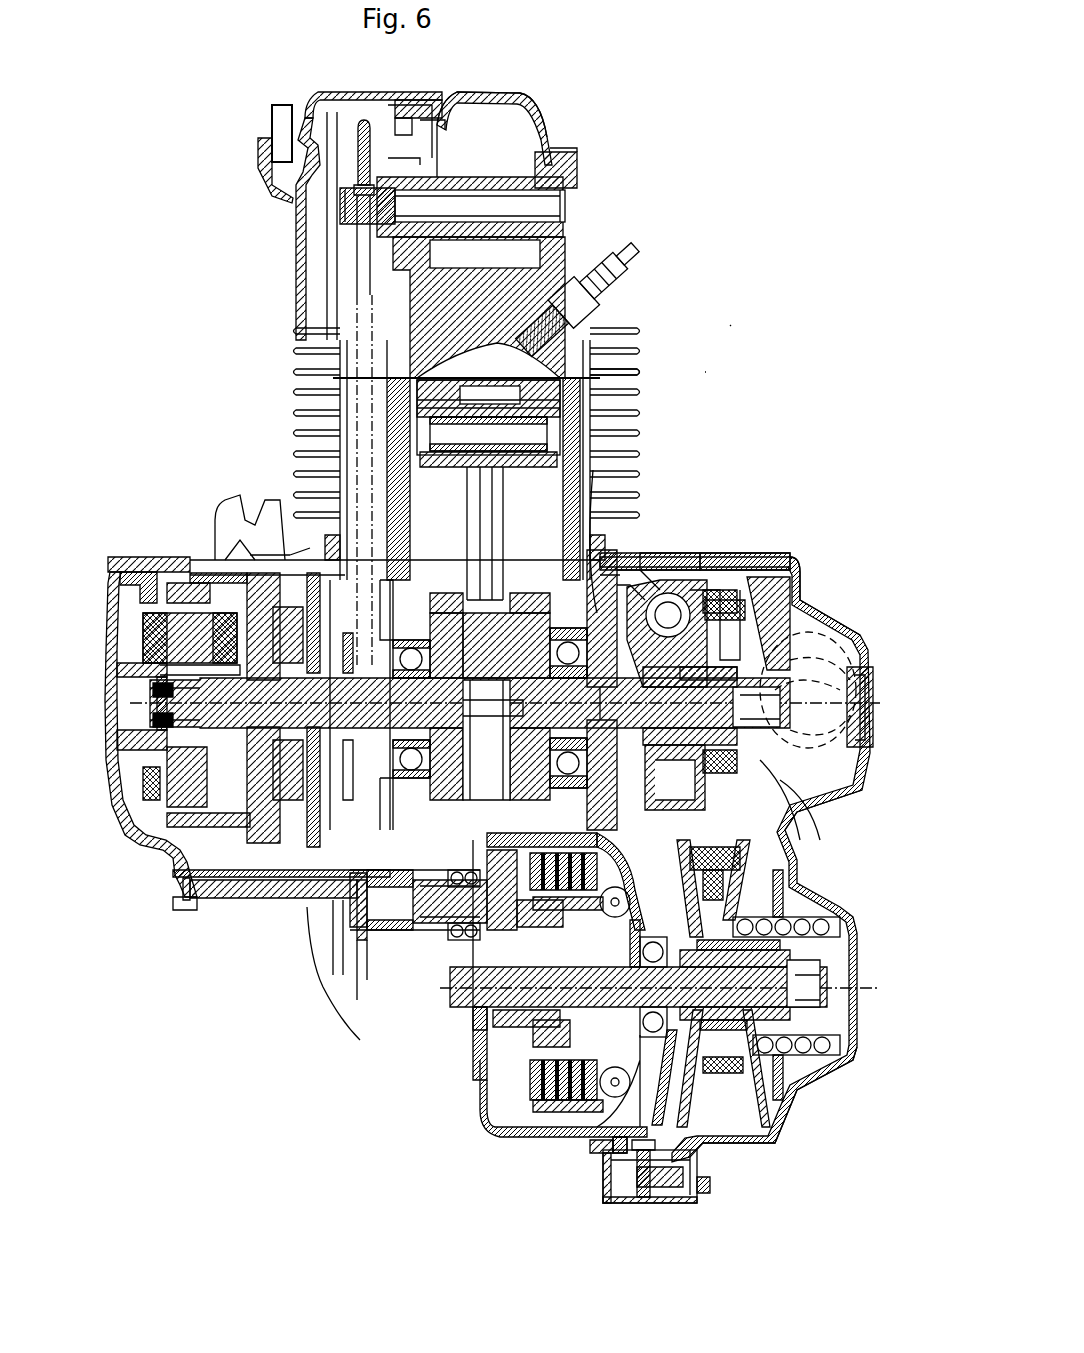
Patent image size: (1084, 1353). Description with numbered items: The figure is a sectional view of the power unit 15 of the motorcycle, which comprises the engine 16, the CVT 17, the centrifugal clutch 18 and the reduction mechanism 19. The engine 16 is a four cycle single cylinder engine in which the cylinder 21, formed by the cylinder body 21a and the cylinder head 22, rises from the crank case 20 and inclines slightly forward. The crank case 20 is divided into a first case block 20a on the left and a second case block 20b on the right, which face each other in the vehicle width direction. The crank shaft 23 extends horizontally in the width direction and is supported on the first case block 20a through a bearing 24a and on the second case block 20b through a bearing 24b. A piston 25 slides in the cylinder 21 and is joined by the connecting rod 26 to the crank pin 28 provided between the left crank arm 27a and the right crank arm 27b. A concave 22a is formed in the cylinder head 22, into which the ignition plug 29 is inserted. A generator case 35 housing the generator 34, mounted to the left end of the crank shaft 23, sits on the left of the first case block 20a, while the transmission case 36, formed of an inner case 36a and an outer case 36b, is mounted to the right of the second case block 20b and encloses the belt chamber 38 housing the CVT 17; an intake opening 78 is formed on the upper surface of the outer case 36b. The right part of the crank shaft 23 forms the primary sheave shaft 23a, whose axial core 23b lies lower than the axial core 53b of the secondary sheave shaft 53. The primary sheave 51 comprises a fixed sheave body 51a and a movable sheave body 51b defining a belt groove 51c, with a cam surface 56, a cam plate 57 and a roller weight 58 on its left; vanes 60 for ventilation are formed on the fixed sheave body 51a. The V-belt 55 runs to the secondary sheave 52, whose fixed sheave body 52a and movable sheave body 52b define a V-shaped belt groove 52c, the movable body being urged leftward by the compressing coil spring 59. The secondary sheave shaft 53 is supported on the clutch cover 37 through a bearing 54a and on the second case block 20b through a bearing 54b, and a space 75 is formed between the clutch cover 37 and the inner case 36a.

The power unit 15 is at (732, 326).
The engine 16 is at (707, 372).
The CVT 17 is at (805, 795).
The centrifugal clutch 18 is at (507, 1093).
The reduction mechanism 19 is at (420, 943).
The crank case 20 is at (415, 988).
The first case block 20a is at (425, 1073).
The second case block 20b is at (463, 1033).
The cylinder 21 is at (272, 388).
The cylinder body 21a is at (630, 402).
The cylinder head 22 is at (585, 203).
The concave 22a is at (505, 335).
The crank shaft 23 is at (338, 760).
The primary sheave shaft 23a is at (863, 750).
The axial core 23b is at (870, 715).
The bearing 24a is at (400, 778).
The bearing 24b is at (560, 790).
The piston 25 is at (533, 420).
The connecting rod 26 is at (500, 497).
The left crank arm 27a is at (450, 597).
The right crank arm 27b is at (535, 597).
The crank pin 28 is at (492, 718).
The ignition plug 29 is at (603, 294).
The generator 34 is at (147, 557).
The generator case 35 is at (120, 833).
The transmission case 36 is at (776, 1255).
The inner case 36a is at (713, 1143).
The outer case 36b is at (730, 1140).
The clutch cover 37 is at (587, 1150).
The belt chamber 38 is at (835, 785).
The primary sheave 51 is at (807, 660).
The fixed sheave body 51a is at (768, 560).
The movable sheave body 51b is at (690, 562).
The belt groove 51c is at (850, 592).
The secondary sheave 52 is at (778, 1113).
The fixed sheave body 52a is at (747, 877).
The movable sheave body 52b is at (757, 843).
The belt groove 52c is at (745, 1115).
The secondary sheave shaft 53 is at (827, 987).
The axial core 53b is at (840, 975).
The bearing 54a is at (623, 1140).
The bearing 54b is at (452, 1023).
The V-belt 55 is at (720, 598).
The cam surface 56 is at (605, 600).
The cam plate 57 is at (630, 560).
The roller weight 58 is at (670, 600).
The compressing coil spring 59 is at (813, 910).
The vanes 60 is at (760, 620).
The space 75 is at (595, 490).
The intake opening 78 is at (867, 663).